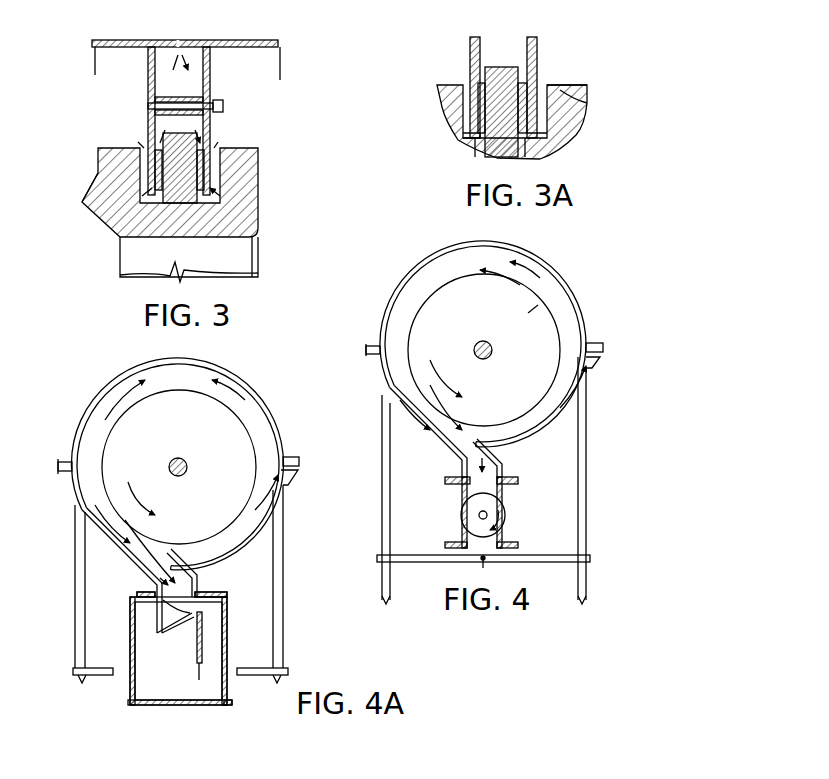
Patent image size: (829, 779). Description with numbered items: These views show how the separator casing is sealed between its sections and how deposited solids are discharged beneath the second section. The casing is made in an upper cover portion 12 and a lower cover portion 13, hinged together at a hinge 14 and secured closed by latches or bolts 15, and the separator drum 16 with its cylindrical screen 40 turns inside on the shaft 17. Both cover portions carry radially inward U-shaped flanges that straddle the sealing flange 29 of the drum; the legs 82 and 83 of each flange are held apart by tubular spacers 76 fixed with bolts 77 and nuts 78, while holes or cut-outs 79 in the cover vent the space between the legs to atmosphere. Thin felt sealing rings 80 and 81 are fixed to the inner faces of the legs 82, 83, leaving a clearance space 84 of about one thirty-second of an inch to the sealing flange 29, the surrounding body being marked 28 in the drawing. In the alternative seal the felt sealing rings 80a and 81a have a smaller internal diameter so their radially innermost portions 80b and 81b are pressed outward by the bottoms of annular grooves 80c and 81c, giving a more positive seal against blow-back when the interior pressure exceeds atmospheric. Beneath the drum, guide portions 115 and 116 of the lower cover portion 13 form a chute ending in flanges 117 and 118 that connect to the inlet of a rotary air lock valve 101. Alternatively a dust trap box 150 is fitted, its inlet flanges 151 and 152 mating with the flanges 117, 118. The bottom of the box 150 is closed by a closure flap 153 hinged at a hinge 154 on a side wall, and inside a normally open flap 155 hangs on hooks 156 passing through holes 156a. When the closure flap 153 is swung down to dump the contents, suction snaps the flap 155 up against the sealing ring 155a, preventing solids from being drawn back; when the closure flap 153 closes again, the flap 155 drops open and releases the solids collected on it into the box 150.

In FIG. 3, the upper cover portion 12 is at (122, 40).
In FIG. 4, the lower cover portion 13 is at (498, 279).
In FIG. 4A, the lower cover portion 13 is at (90, 532).
In FIG. 4, the hinge 14 is at (372, 345).
In FIG. 4A, the hinge 14 is at (85, 571).
In FIG. 4, the latches or bolts 15 is at (597, 345).
In FIG. 4A, the latches or bolts 15 is at (268, 570).
In FIG. 4, the separator drum 16 is at (462, 330).
In FIG. 4A, the separator drum 16 is at (179, 467).
In FIG. 4, the shaft 17 is at (490, 354).
In FIG. 4A, the shaft 17 is at (178, 467).
In FIG. 3, the base block 28 is at (246, 166).
In FIG. 3A, the base block 28 is at (567, 108).
In FIG. 3, the sealing flange 29 is at (198, 140).
In FIG. 3A, the sealing flange 29 is at (515, 67).
In FIG. 4, the cylindrical screen 40 is at (538, 307).
In FIG. 3, the tubular spacers 76 is at (188, 97).
In FIG. 3, the bolts 77 is at (148, 110).
In FIG. 3, the nuts 78 is at (215, 103).
In FIG. 3, the holes or cut-outs 79 is at (181, 38).
In FIG. 3, the felt sealing ring 80 is at (150, 157).
In FIG. 3A, the felt sealing ring 80a is at (470, 130).
In FIG. 3A, the radially innermost portion 80b is at (467, 148).
In FIG. 3A, the annular groove 80c is at (483, 155).
In FIG. 3, the felt sealing ring 81 is at (208, 173).
In FIG. 3A, the felt sealing ring 81a is at (580, 88).
In FIG. 3A, the radially innermost portion 81b is at (537, 130).
In FIG. 3A, the annular groove 81c is at (547, 153).
In FIG. 3, the leg 82 is at (148, 123).
In FIG. 3A, the leg 82 is at (470, 60).
In FIG. 3, the leg 83 is at (210, 62).
In FIG. 3A, the leg 83 is at (537, 60).
In FIG. 3, the clearance space 84 is at (122, 231).
In FIG. 4, the rotary air lock valve 101 is at (498, 512).
In FIG. 4, the guide portion 115 is at (433, 452).
In FIG. 4A, the guide portion 115 is at (122, 560).
In FIG. 4, the guide portion 116 is at (502, 460).
In FIG. 4A, the guide portion 116 is at (203, 571).
In FIG. 4, the flange 117 is at (452, 474).
In FIG. 4A, the flange 117 is at (140, 590).
In FIG. 4, the flange 118 is at (517, 477).
In FIG. 4A, the flange 118 is at (213, 589).
In FIG. 4A, the dust trap box 150 is at (132, 645).
In FIG. 4A, the flange 151 is at (135, 594).
In FIG. 4A, the flange 152 is at (225, 606).
In FIG. 4A, the closure flap 153 is at (130, 701).
In FIG. 4A, the hinge 154 is at (228, 696).
In FIG. 4A, the flap 155 is at (197, 650).
In FIG. 4A, the sealing ring 155a is at (163, 628).
In FIG. 4A, the hooks 156 is at (200, 613).
In FIG. 4A, the holes 156a is at (199, 683).